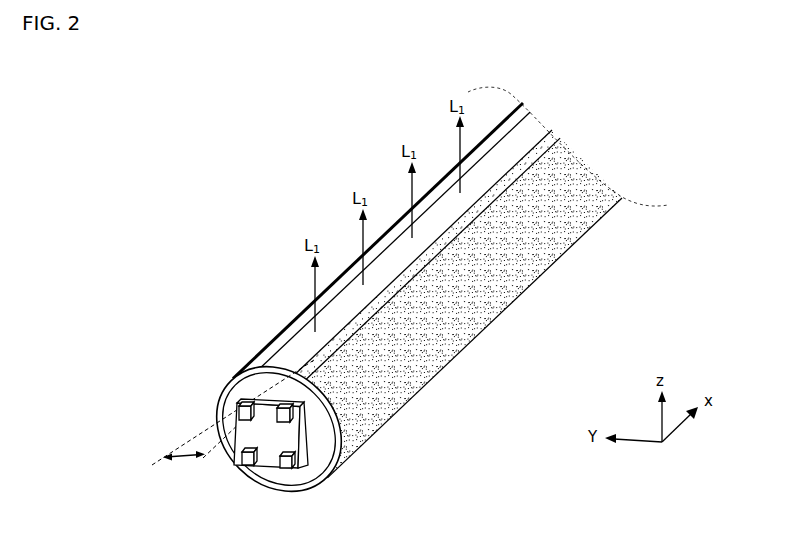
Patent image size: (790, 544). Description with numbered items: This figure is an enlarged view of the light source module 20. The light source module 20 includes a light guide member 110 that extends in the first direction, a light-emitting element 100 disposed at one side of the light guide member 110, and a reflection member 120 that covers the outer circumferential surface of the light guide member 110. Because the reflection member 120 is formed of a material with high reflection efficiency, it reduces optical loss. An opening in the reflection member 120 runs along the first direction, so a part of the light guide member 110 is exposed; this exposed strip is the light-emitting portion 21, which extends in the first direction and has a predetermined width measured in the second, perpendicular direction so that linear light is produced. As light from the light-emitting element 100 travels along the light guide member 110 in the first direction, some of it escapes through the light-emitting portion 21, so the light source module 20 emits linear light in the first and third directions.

The light source module 20 is at (392, 309).
The light-emitting portion 21 is at (290, 353).
The light-emitting element 100 is at (262, 448).
The light guide member 110 is at (296, 473).
The reflection member 120 is at (358, 420).